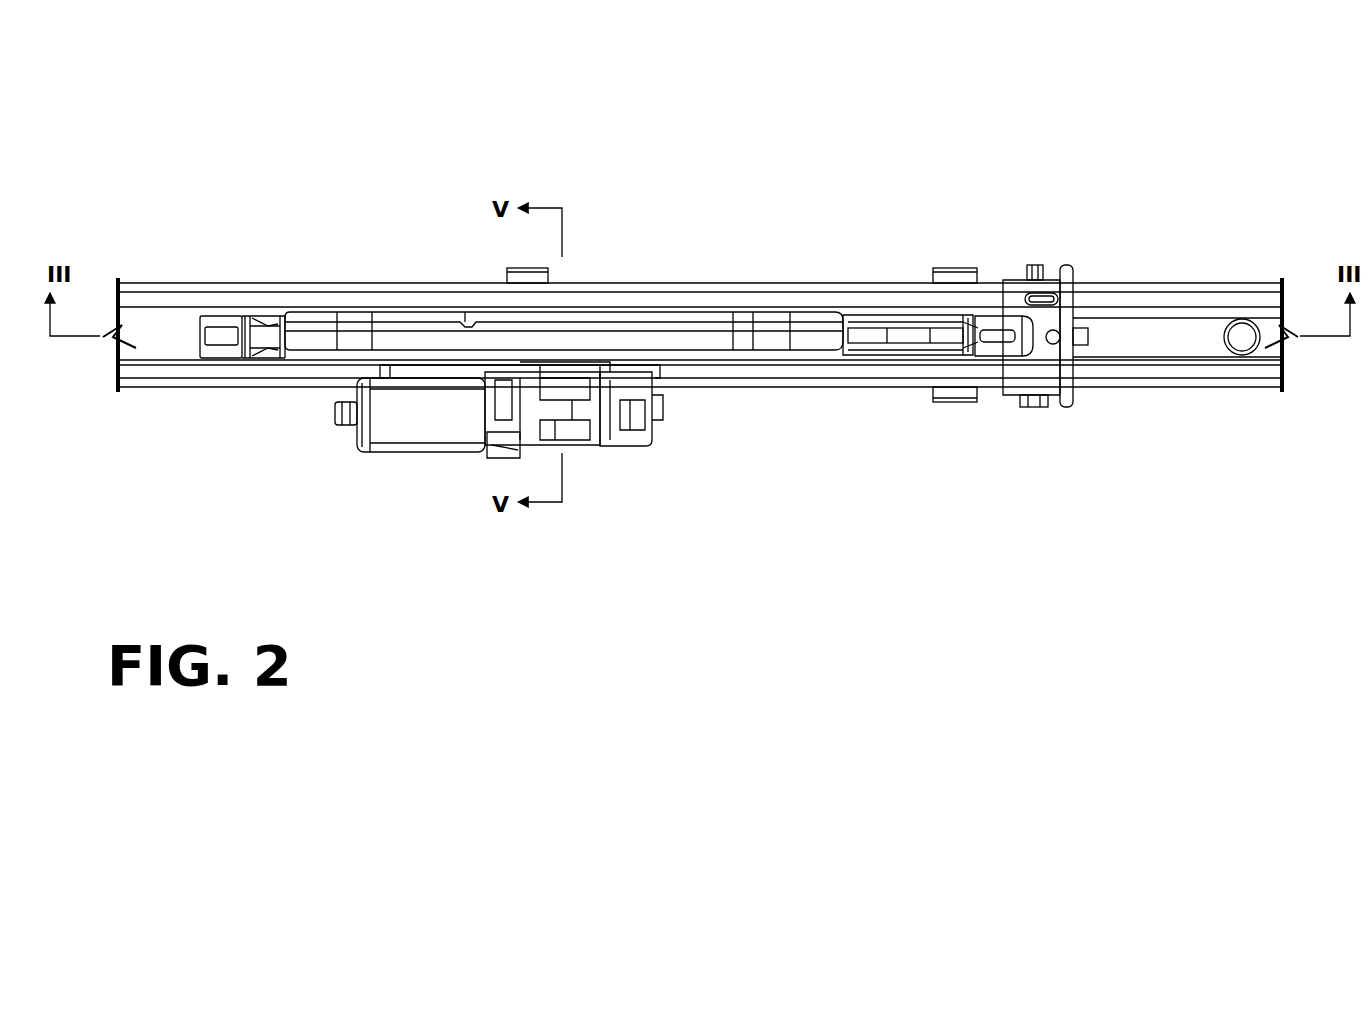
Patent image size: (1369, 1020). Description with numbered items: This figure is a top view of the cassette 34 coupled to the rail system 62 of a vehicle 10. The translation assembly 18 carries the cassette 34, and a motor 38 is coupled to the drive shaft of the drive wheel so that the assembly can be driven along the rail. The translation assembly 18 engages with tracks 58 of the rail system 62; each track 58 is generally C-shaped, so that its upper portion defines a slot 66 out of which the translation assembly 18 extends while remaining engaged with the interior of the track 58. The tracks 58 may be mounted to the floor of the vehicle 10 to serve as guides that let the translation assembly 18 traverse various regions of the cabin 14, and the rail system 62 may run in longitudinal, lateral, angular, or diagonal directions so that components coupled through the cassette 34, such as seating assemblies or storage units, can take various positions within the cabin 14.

The vehicle 10 is at (175, 148).
The cabin 14 is at (1117, 198).
The translation assembly 18 is at (321, 348).
The cassette 34 is at (642, 346).
The motor 38 is at (606, 407).
The track 58 is at (1156, 312).
The rail system 62 is at (1217, 276).
The slot 66 is at (1140, 356).